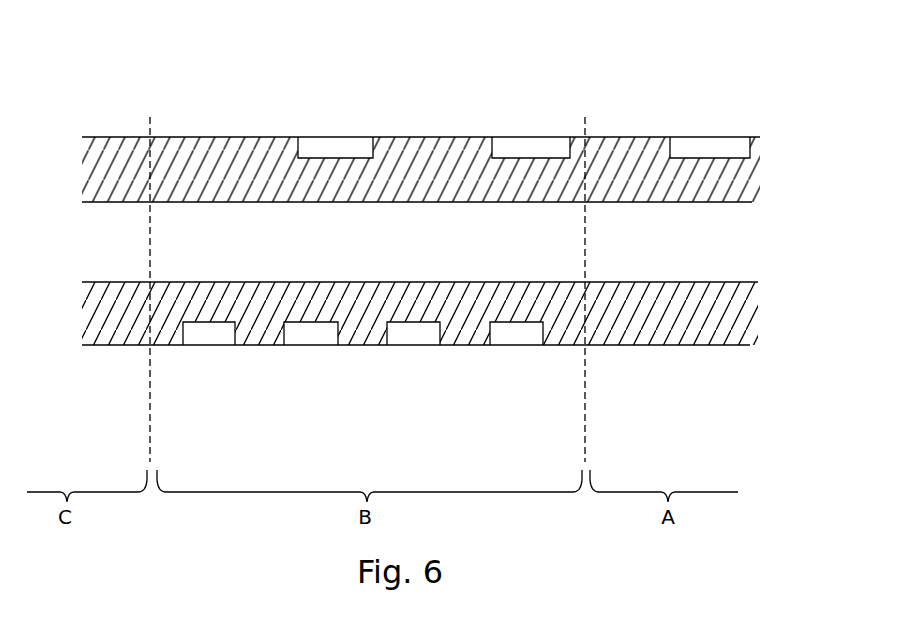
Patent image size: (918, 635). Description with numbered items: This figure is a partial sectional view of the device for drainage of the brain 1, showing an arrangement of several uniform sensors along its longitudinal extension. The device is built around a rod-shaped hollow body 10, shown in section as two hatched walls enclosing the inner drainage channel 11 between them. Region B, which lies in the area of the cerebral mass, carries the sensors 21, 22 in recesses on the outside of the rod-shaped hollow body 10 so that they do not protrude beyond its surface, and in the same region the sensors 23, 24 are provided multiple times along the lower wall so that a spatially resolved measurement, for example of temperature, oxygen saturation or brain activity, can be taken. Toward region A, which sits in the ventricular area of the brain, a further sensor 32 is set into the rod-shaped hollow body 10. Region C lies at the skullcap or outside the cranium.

The device for drainage of the brain 1 is at (199, 104).
The rod-shaped hollow body 10 is at (430, 160).
The drainage channel 11 is at (265, 218).
The sensor 21 is at (528, 150).
The sensor 22 is at (322, 150).
The sensor 32 is at (693, 150).
The sensor 23 is at (355, 378).
The sensor 24 is at (212, 335).